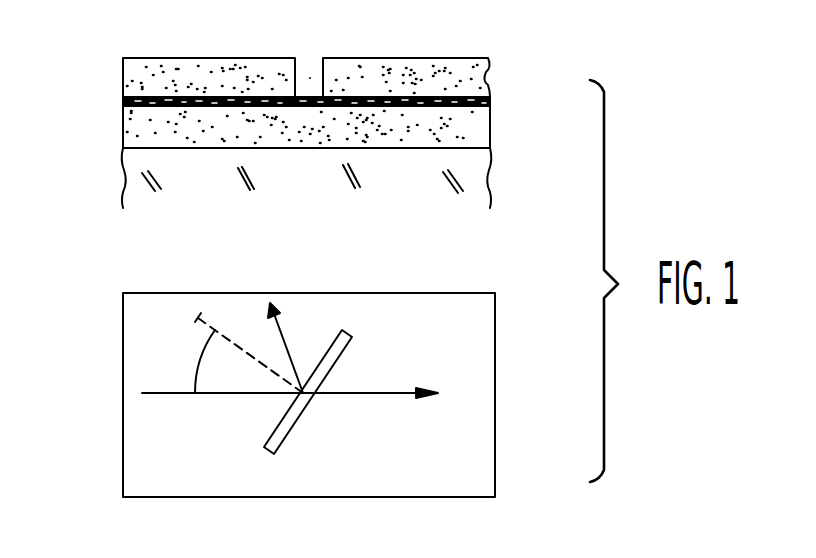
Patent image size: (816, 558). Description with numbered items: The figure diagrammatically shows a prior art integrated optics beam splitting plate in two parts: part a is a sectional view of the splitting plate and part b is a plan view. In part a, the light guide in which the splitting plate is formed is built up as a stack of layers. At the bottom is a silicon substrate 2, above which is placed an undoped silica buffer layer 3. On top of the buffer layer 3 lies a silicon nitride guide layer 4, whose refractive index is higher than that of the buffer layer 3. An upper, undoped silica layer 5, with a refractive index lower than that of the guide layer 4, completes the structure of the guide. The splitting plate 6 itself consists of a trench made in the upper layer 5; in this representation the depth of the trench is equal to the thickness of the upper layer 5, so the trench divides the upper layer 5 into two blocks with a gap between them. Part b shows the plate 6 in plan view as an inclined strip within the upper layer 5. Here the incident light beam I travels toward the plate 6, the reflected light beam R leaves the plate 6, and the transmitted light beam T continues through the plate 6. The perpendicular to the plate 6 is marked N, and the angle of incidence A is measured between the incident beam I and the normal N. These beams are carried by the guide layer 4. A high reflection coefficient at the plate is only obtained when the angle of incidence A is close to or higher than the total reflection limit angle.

The silicon substrate 2 is at (162, 178).
The undoped silica buffer layer 3 is at (155, 132).
The Si3N4 guide layer 4 is at (127, 100).
The upper undoped silica layer 5 is at (142, 80).
The splitting plate 6 is at (310, 77).
The incident light beam I is at (157, 397).
The transmitted light beam T is at (383, 391).
The reflected light beam R is at (285, 337).
The perpendicular to the plate N is at (199, 316).
The angle of incidence A is at (195, 361).
The sectional view part a is at (577, 147).
The plan view part b is at (579, 394).